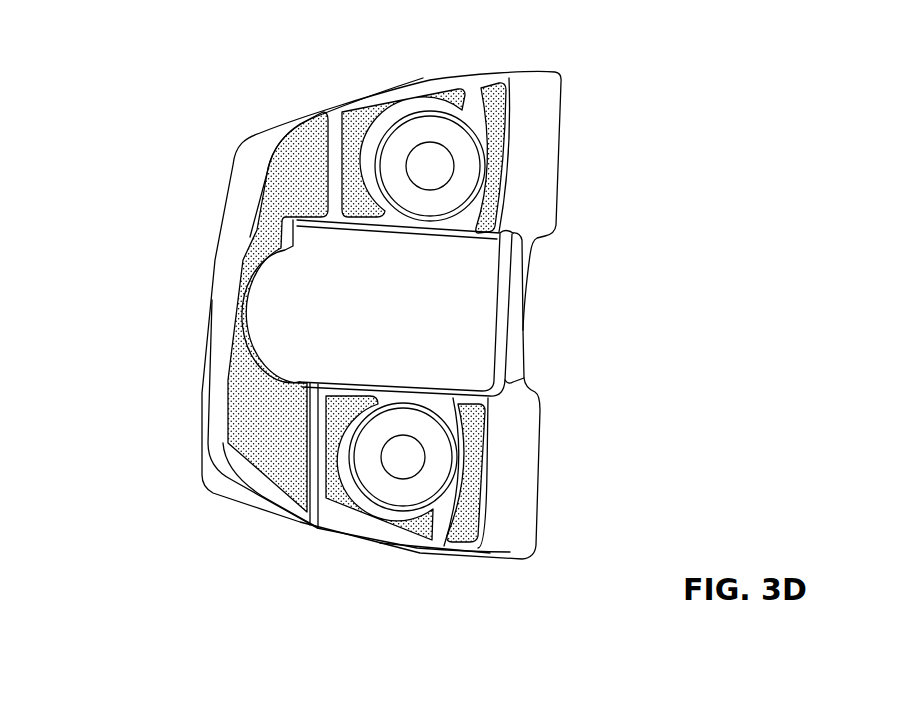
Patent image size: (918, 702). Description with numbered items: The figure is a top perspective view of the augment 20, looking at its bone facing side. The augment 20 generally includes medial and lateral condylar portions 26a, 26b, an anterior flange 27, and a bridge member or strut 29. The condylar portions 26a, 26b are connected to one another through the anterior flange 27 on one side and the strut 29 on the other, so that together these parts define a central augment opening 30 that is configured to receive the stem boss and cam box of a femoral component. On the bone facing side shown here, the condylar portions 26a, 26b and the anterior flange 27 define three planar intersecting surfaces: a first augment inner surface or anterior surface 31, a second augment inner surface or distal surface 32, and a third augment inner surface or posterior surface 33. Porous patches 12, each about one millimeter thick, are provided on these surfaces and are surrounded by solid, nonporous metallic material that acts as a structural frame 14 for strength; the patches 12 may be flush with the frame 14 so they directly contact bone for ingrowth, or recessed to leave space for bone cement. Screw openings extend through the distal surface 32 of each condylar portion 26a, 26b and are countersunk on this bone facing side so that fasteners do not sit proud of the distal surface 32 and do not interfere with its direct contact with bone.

The augment 20 is at (234, 101).
The anterior flange 27 is at (176, 332).
The first augment inner surface or anterior surface 31 is at (315, 150).
The porous patches 12 is at (281, 404).
The augment opening 30 is at (410, 287).
The structural frame 14 is at (380, 400).
The bridge member or strut 29 is at (523, 322).
The medial condylar portion 26a is at (588, 152).
The second augment inner surface or distal surface 32 is at (393, 103).
The third augment inner surface or posterior surface 33 is at (488, 99).
The lateral condylar portion 26b is at (553, 501).